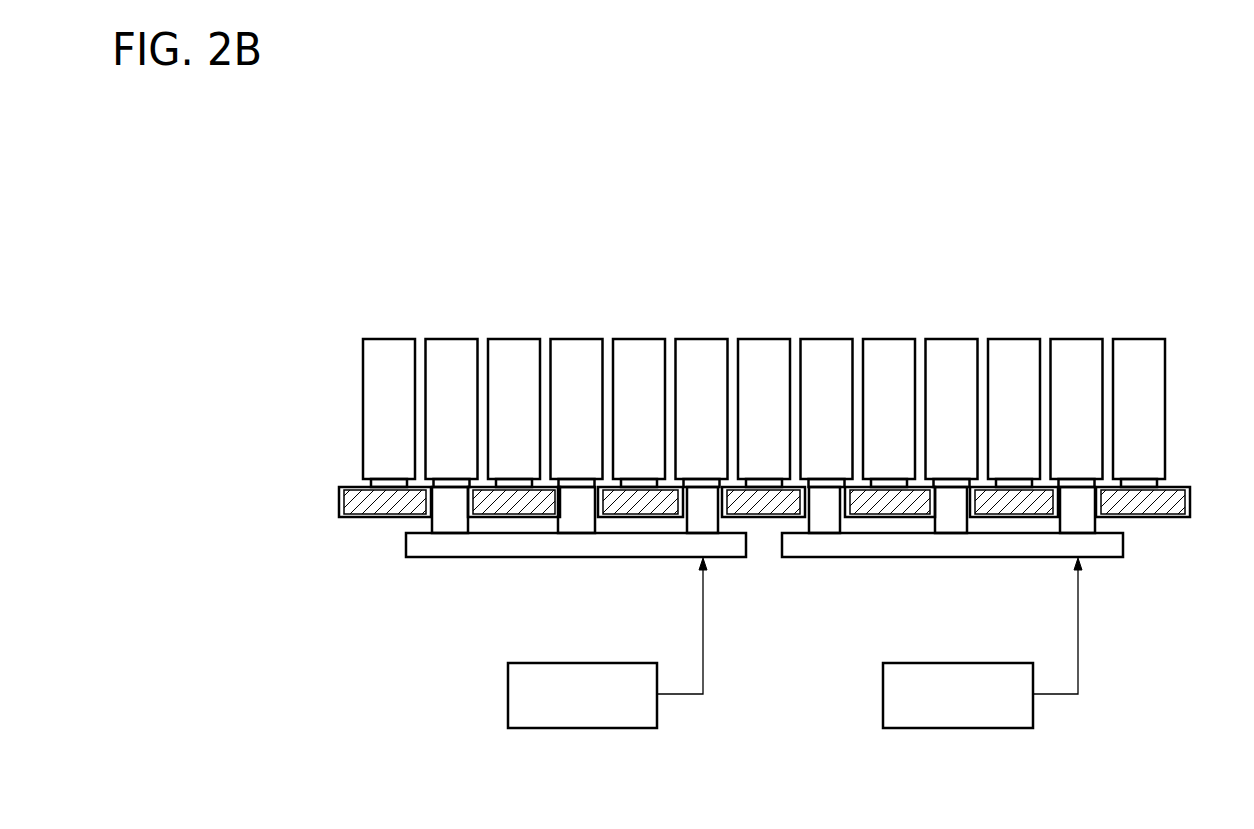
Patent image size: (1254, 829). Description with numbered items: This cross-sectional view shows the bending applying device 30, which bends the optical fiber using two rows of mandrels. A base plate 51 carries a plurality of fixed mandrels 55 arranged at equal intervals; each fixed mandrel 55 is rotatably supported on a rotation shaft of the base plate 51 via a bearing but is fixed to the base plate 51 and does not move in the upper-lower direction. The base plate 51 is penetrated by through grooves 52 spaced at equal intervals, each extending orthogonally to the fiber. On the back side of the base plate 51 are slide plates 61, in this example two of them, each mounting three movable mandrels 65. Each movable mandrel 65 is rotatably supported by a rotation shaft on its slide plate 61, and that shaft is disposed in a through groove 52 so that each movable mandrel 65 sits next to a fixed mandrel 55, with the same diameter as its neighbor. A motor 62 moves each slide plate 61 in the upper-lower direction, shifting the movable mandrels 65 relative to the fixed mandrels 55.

The bending applying device 30 is at (392, 195).
The base plate 51 is at (1172, 485).
The through groove 52 is at (684, 508).
The fixed mandrel 55 is at (388, 365).
The movable mandrel 65 is at (450, 373).
The slide plate 61 is at (406, 558).
The motor 62 is at (582, 728).